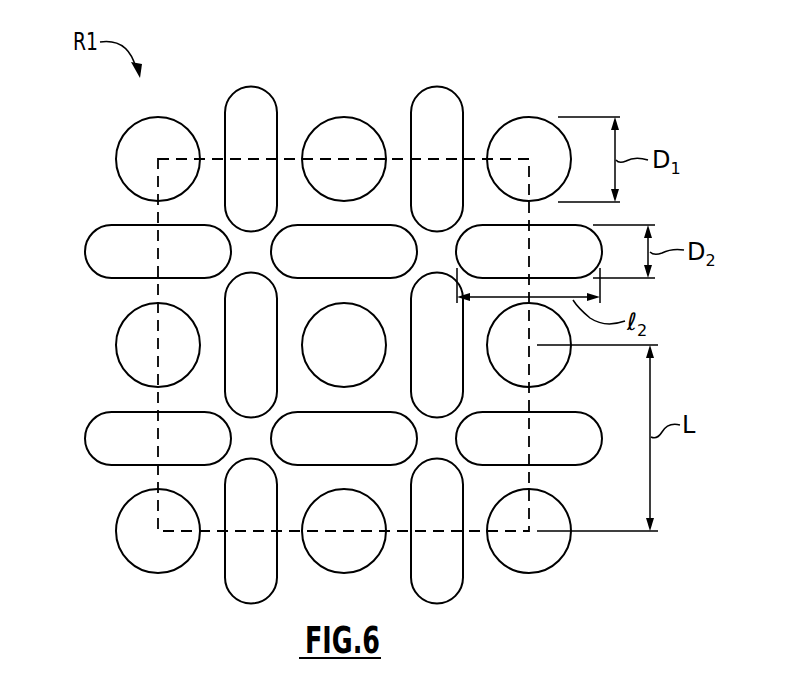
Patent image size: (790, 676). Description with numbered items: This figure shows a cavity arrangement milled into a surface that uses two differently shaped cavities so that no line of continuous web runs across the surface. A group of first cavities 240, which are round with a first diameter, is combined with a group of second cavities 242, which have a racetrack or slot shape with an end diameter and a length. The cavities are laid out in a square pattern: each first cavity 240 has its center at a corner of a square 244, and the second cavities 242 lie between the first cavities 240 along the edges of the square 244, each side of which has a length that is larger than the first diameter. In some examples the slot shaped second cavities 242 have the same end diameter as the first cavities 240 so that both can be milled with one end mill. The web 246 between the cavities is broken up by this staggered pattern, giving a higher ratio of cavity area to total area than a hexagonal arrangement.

The first cavities 240 is at (501, 146).
The second cavities 242 is at (447, 195).
The square 244 is at (158, 284).
The land between openings 246 is at (473, 513).